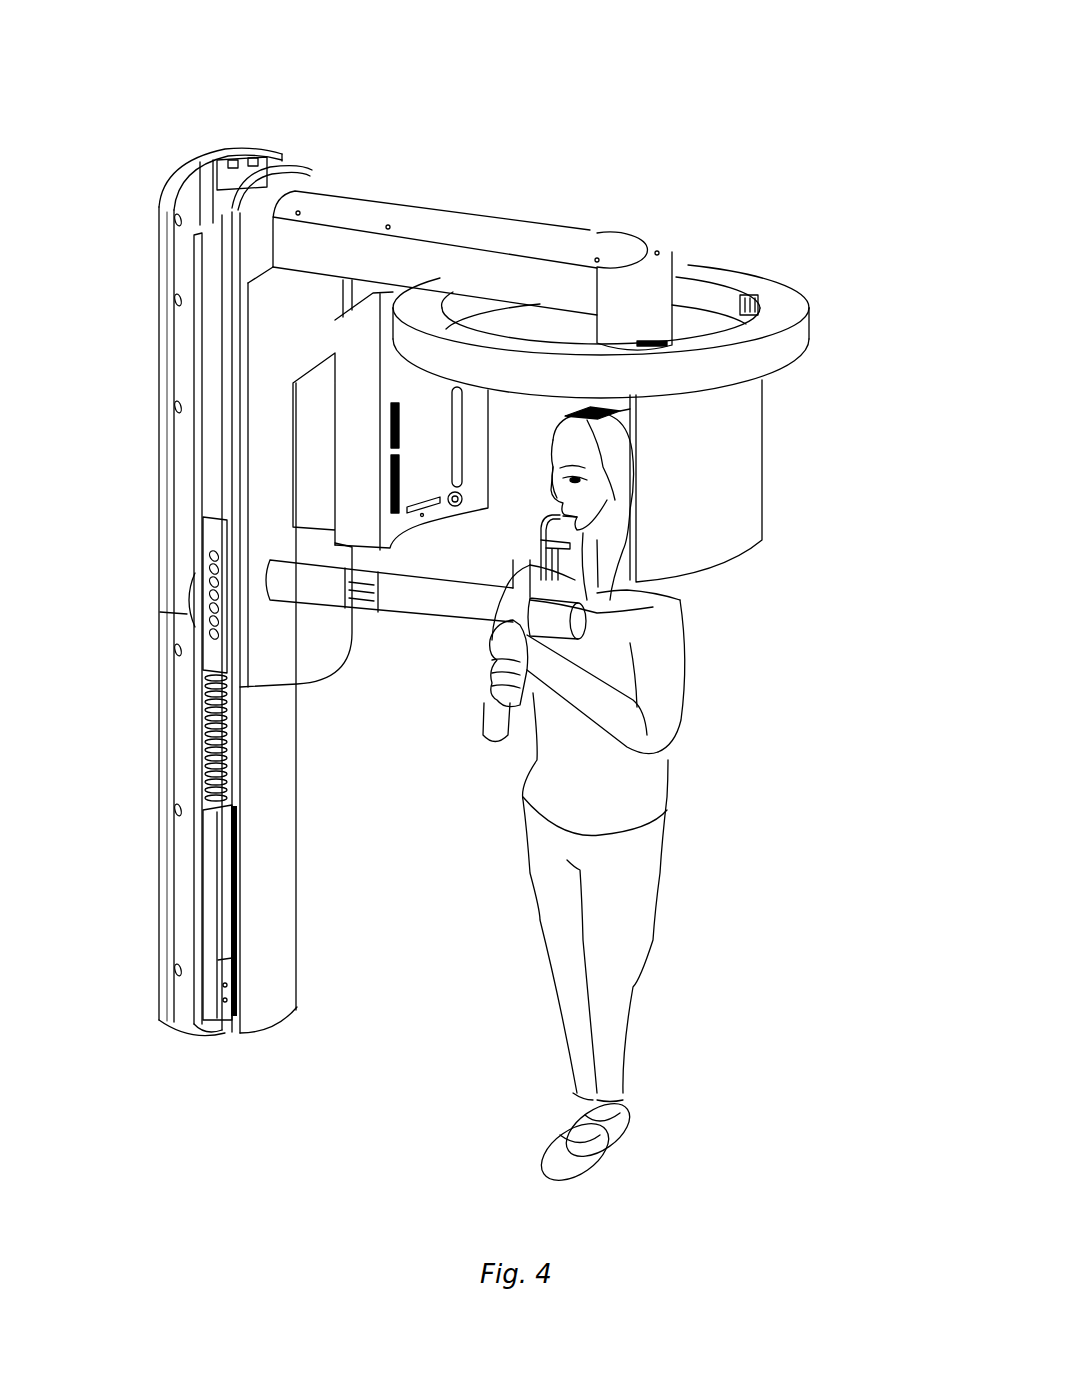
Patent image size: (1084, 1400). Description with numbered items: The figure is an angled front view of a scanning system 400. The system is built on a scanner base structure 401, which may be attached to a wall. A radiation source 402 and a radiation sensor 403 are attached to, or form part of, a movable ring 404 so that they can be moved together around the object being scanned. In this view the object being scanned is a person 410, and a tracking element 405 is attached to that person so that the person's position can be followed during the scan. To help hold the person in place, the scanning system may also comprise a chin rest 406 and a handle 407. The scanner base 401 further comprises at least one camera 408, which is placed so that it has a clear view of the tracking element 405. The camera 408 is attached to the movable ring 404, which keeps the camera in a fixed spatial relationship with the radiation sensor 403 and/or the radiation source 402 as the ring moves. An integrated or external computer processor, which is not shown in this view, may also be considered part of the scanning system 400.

The scanning system 400 is at (503, 522).
The scanner base structure 401 is at (162, 591).
The radiation source 402 is at (331, 599).
The radiation sensor 403 is at (789, 478).
The movable ring 404 is at (678, 331).
The tracking element 405 is at (656, 292).
The chin rest 406 is at (692, 519).
The handle 407 is at (414, 713).
The camera 408 is at (460, 239).
The person 410 is at (694, 800).